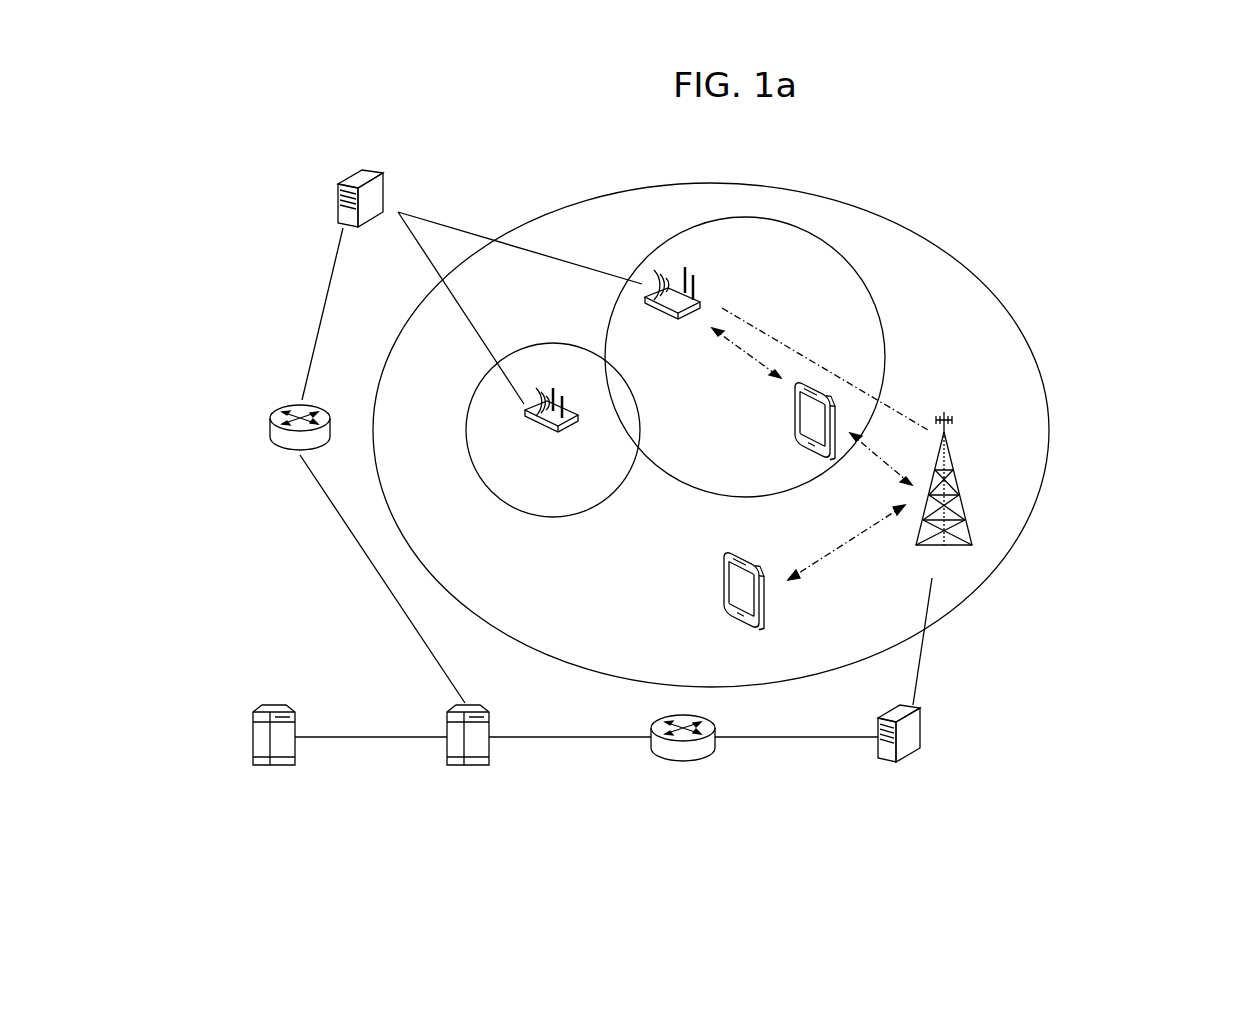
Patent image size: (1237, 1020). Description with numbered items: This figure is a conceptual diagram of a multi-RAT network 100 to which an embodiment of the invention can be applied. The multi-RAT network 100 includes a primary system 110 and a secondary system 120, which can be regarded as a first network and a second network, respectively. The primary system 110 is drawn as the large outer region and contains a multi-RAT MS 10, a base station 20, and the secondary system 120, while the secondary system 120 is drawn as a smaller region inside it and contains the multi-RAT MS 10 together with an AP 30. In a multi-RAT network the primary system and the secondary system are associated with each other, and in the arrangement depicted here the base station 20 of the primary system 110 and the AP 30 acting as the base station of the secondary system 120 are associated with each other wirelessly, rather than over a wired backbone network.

The multi-RAT network 100 is at (1141, 176).
The primary system 110 is at (979, 281).
The secondary system 120 is at (744, 217).
The multi-RAT MS 10 is at (746, 550).
The base station 20 is at (943, 412).
The AP 30 is at (698, 297).